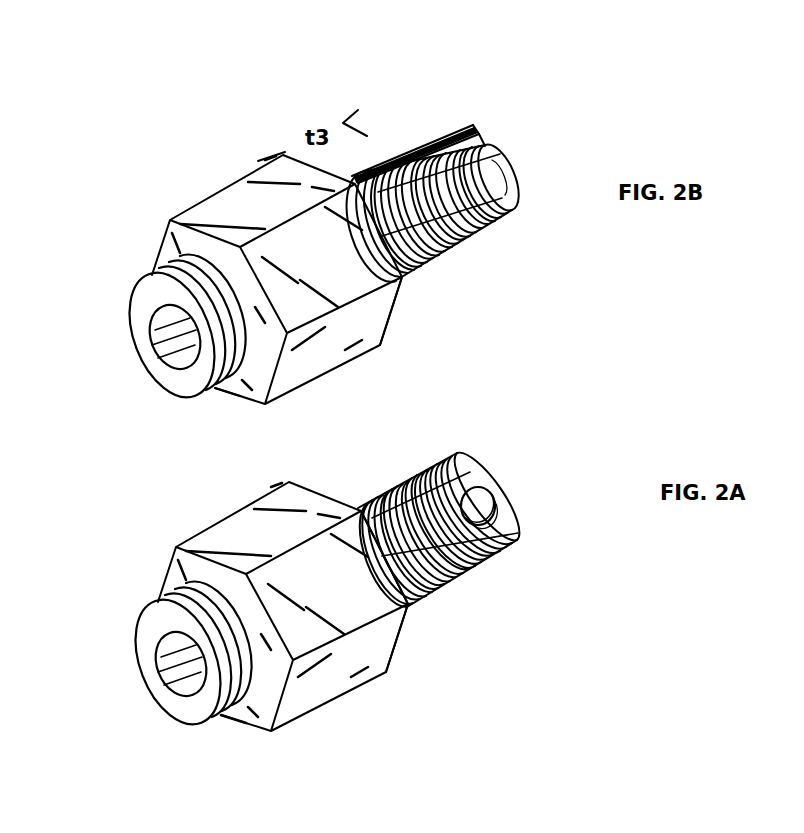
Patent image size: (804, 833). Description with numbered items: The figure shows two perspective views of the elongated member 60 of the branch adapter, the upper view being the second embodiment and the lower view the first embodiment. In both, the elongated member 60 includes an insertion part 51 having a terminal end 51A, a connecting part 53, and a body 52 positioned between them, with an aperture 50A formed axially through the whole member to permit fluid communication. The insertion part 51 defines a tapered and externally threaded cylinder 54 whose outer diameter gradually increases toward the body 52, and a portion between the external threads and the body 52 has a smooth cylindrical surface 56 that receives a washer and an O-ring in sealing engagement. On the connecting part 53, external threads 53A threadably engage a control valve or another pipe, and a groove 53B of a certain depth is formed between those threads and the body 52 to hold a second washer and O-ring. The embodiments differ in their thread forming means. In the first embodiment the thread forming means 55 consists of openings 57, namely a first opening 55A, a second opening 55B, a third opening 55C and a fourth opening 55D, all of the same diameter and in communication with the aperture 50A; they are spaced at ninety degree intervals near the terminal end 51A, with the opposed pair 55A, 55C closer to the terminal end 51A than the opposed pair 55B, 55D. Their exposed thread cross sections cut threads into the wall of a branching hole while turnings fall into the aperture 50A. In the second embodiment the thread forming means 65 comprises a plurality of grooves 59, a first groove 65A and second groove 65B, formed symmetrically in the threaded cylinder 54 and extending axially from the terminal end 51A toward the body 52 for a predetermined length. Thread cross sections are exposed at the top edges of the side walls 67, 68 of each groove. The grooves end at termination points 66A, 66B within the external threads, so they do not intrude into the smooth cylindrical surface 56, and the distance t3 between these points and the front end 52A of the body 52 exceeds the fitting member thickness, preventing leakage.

In FIG. 2A, the aperture 50A is at (157, 680).
In FIG. 2B, the insertion part 51 is at (364, 100).
In FIG. 2A, the insertion part 51 is at (546, 590).
In FIG. 2B, the terminal end 51A is at (530, 183).
In FIG. 2A, the terminal end 51A is at (533, 538).
In FIG. 2B, the body 52 is at (235, 135).
In FIG. 2A, the body 52 is at (283, 632).
In FIG. 2B, the front end 52A is at (402, 300).
In FIG. 2B, the connecting part 53 is at (127, 240).
In FIG. 2A, the connecting part 53 is at (217, 697).
In FIG. 2B, the external threads 53A is at (226, 390).
In FIG. 2A, the external threads 53A is at (151, 652).
In FIG. 2B, the groove 53B is at (256, 398).
In FIG. 2A, the groove 53B is at (294, 653).
In FIG. 2B, the tapered and externally threaded cylinder 54 is at (483, 233).
In FIG. 2A, the tapered and externally threaded cylinder 54 is at (450, 470).
In FIG. 2A, the thread forming means 55 is at (500, 590).
In FIG. 2A, the first opening 55A is at (518, 501).
In FIG. 2A, the second opening 55B is at (455, 582).
In FIG. 2A, the third opening 55C is at (485, 437).
In FIG. 2A, the fourth opening 55D is at (403, 470).
In FIG. 2B, the smooth cylindrical surface 56 is at (388, 222).
In FIG. 2A, the smooth cylindrical surface 56 is at (410, 626).
In FIG. 2A, the openings 57 is at (518, 487).
In FIG. 2B, the grooves 59 is at (538, 82).
In FIG. 2B, the elongated member 60 is at (87, 103).
In FIG. 2A, the elongated member 60 is at (175, 527).
In FIG. 2B, the thread forming means 65 is at (442, 60).
In FIG. 2B, the first groove 65A is at (492, 130).
In FIG. 2B, the second groove 65B is at (457, 263).
In FIG. 2B, the termination point 66A is at (412, 140).
In FIG. 2B, the termination point 66B is at (505, 227).
In FIG. 2B, the side wall 67 is at (471, 147).
In FIG. 2B, the side wall 68 is at (487, 147).